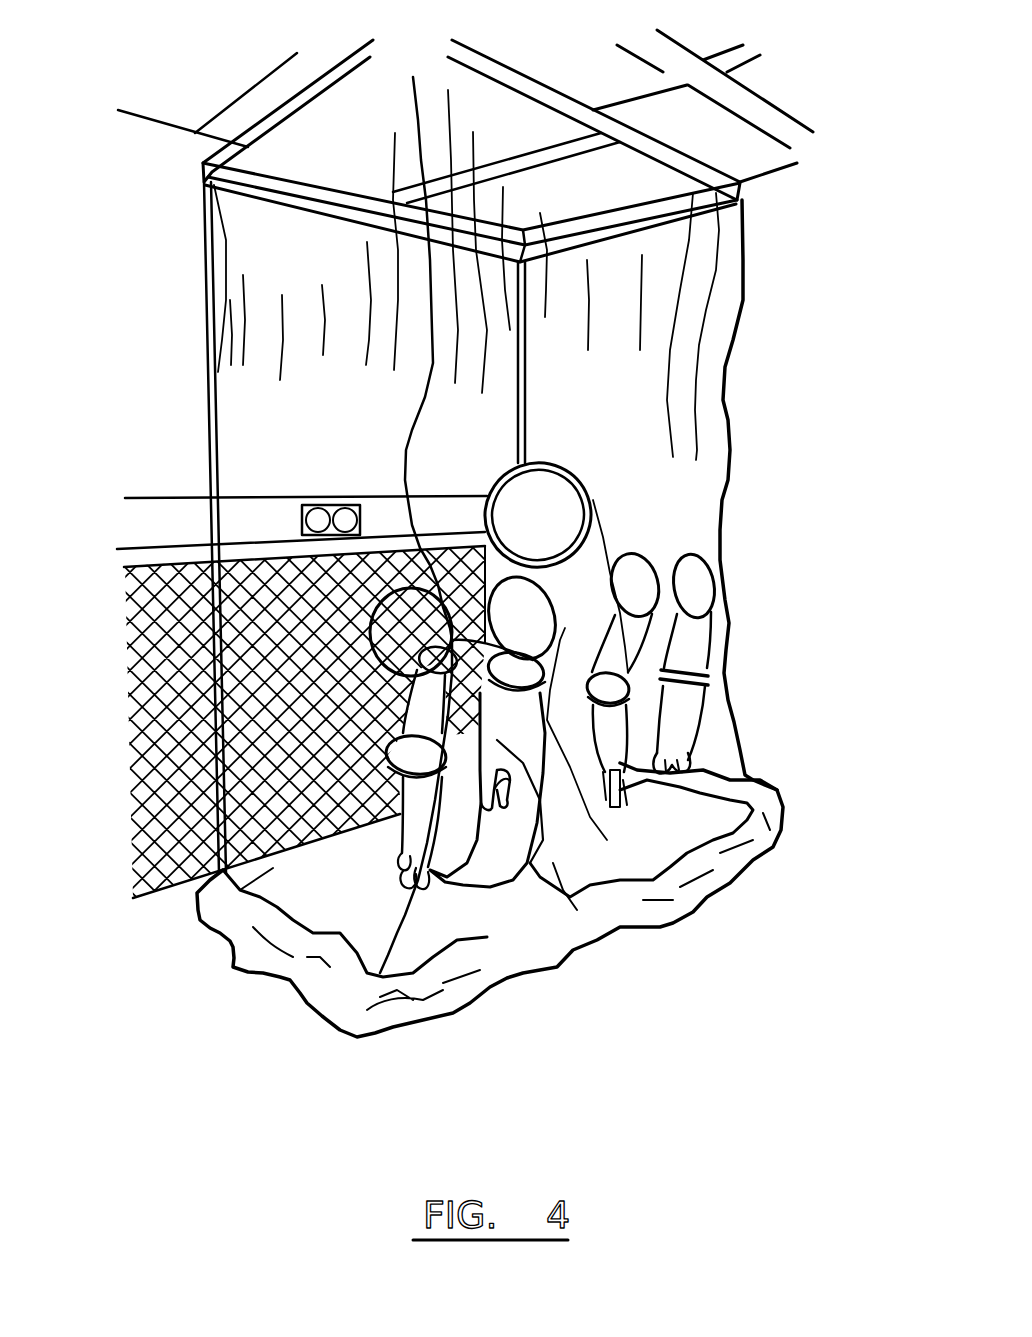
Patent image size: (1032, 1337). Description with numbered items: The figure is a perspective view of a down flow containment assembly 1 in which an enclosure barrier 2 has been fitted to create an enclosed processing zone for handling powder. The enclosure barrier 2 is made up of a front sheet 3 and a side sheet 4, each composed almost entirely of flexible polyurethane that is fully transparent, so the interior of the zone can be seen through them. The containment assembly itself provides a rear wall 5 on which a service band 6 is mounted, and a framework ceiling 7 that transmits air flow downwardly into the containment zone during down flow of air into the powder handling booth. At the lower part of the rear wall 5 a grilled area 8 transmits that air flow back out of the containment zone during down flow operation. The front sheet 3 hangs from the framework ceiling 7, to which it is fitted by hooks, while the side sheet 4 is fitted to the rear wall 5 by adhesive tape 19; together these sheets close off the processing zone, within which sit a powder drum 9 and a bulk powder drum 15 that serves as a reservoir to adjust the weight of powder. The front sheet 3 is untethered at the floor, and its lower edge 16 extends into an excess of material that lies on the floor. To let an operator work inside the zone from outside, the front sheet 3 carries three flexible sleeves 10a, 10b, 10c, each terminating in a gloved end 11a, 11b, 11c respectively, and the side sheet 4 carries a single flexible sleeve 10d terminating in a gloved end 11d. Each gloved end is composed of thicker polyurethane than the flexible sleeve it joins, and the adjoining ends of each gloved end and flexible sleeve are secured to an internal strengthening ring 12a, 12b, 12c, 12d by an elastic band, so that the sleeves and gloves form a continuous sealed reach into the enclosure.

The down flow containment assembly 1 is at (760, 232).
The enclosure barrier 2 is at (692, 328).
The front sheet 3 is at (713, 418).
The side sheet 4 is at (443, 936).
The rear wall 5 is at (293, 262).
The service band 6 is at (330, 505).
The framework ceiling 7 is at (703, 132).
The grilled area 8 is at (275, 688).
The powder drum 9 is at (378, 997).
The flexible sleeve 10a is at (695, 583).
The flexible sleeve 10b is at (630, 597).
The flexible sleeve 10c is at (537, 625).
The flexible sleeve 10d is at (301, 837).
The gloved end 11a is at (687, 715).
The gloved end 11b is at (754, 831).
The gloved end 11c is at (620, 905).
The gloved end 11d is at (353, 1008).
The internal strengthening ring 12a is at (771, 686).
The internal strengthening ring 12b is at (739, 794).
The internal strengthening ring 12c is at (626, 827).
The internal strengthening ring 12d is at (325, 898).
The bulk powder drum 15 is at (553, 518).
The lower edge 16 is at (650, 933).
The adhesive tape 19 is at (207, 353).